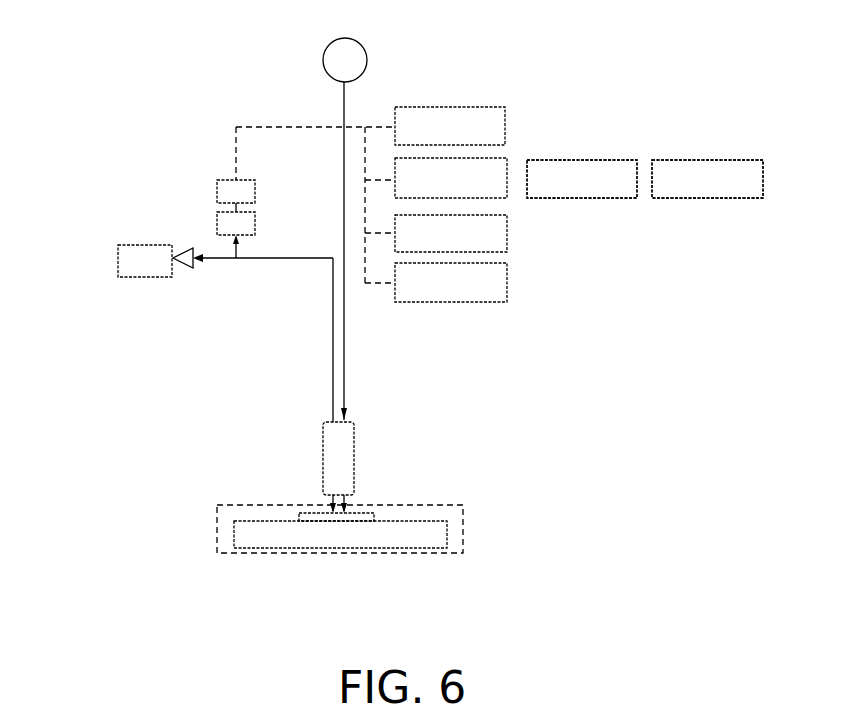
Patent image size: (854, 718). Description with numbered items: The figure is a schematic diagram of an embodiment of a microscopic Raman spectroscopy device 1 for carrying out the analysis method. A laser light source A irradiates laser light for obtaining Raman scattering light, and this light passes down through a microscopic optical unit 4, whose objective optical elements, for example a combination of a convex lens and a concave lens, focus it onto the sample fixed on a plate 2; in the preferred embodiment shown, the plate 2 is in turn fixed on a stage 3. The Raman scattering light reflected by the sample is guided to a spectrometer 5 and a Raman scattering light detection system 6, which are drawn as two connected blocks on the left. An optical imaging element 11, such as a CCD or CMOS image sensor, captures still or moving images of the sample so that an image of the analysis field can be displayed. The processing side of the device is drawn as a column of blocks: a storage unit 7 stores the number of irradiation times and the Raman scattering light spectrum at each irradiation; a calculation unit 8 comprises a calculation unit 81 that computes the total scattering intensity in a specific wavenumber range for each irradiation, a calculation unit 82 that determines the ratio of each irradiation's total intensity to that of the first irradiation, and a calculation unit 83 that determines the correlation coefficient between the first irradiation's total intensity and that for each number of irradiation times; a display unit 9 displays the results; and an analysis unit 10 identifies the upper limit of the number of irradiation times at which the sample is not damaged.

The microscopic Raman spectroscopy device 1 is at (577, 72).
The laser light source A is at (357, 58).
The plate 2 is at (327, 520).
The stage 3 is at (398, 540).
The microscopic optical unit 4 is at (322, 458).
The spectrometer 5 is at (217, 222).
The Raman scattering light detection system 6 is at (217, 190).
The storage unit 7 is at (490, 123).
The calculation unit 8 is at (592, 148).
The calculation unit 81 is at (490, 182).
The calculation unit 82 is at (582, 182).
The calculation unit 83 is at (687, 182).
The display unit 9 is at (477, 234).
The analysis unit 10 is at (473, 285).
The optical imaging element 11 is at (137, 262).